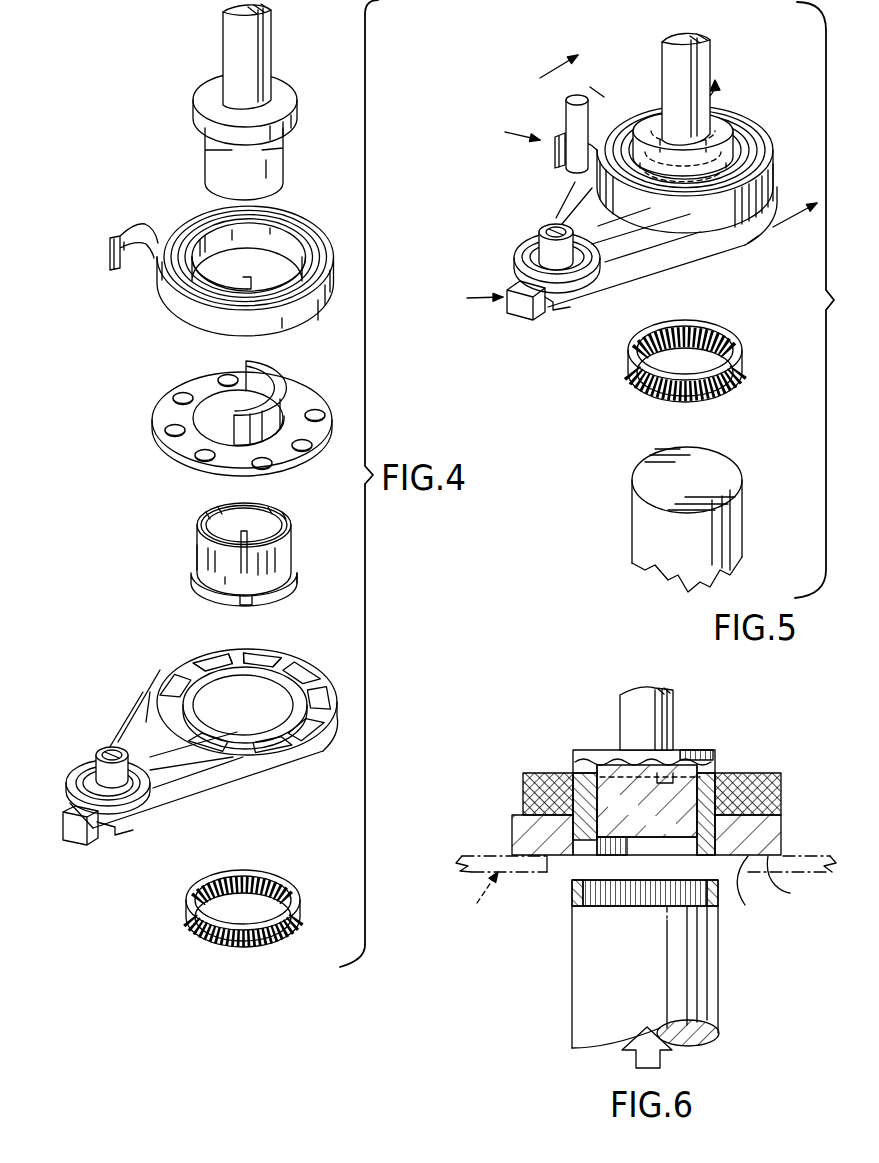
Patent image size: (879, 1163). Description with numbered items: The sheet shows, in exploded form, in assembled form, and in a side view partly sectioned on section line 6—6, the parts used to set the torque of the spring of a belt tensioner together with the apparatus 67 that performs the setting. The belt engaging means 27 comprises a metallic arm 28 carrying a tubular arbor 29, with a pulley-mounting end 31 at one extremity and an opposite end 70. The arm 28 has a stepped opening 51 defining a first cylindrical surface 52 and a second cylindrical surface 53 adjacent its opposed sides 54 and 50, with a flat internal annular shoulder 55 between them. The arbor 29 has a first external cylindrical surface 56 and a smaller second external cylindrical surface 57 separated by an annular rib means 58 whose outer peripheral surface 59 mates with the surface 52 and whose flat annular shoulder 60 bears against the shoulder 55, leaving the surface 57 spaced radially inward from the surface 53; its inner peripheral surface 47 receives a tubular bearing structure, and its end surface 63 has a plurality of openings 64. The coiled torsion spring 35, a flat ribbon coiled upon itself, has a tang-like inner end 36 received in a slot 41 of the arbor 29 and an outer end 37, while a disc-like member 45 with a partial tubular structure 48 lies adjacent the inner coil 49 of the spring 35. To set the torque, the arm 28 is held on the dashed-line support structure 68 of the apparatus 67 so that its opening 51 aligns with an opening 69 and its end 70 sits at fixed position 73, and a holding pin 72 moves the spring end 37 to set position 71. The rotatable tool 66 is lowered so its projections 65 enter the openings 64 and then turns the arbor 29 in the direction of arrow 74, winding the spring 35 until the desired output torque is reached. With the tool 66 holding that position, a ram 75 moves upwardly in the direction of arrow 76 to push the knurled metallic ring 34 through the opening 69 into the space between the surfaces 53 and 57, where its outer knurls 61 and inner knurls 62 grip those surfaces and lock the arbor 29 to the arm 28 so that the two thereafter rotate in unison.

In FIG. 5, the line 6— 6 is at (677, 140).
In FIG. 4, the belt engaging means 27 is at (142, 707).
In FIG. 5, the belt engaging means 27 is at (568, 200).
In FIG. 4, the arm 28 is at (298, 760).
In FIG. 5, the arm 28 is at (713, 243).
In FIG. 4, the tubular arbor 29 is at (212, 568).
In FIG. 6, the tubular arbor 29 is at (583, 778).
In FIG. 4, the end of the belt engaging arm 31 is at (70, 767).
In FIG. 5, the end of the belt engaging arm 31 is at (525, 260).
In FIG. 4, the knurled metallic ring 34 is at (187, 927).
In FIG. 5, the knurled metallic ring 34 is at (633, 382).
In FIG. 6, the knurled metallic ring 34 is at (570, 892).
In FIG. 4, the coiled torsion spring 35 is at (165, 312).
In FIG. 5, the coiled torsion spring 35 is at (773, 177).
In FIG. 4, the inner end of the spring 36 is at (243, 280).
In FIG. 4, the outer end of the spring 37 is at (118, 236).
In FIG. 5, the outer end of the spring 37 is at (553, 153).
In FIG. 4, the slot 41 is at (280, 550).
In FIG. 4, the disc-like member 45 is at (162, 411).
In FIG. 6, the disc-like member 45 is at (525, 813).
In FIG. 4, the inner peripheral surface 47 is at (277, 533).
In FIG. 4, the partial tubular structure 48 is at (273, 377).
In FIG. 6, the partial tubular structure 48 is at (730, 777).
In FIG. 4, the inner coil 49 is at (217, 268).
In FIG. 4, the side of the arm 50 is at (270, 780).
In FIG. 5, the side of the arm 50 is at (705, 258).
In FIG. 6, the side of the arm 50 is at (770, 894).
In FIG. 4, the stepped opening 51 is at (293, 662).
In FIG. 4, the first cylindrical surface 52 is at (267, 657).
In FIG. 4, the second cylindrical surface 53 is at (207, 658).
In FIG. 6, the second cylindrical surface 53 is at (597, 830).
In FIG. 4, the side of the arm 54 is at (148, 690).
In FIG. 4, the flat internal annular shoulder 55 is at (243, 657).
In FIG. 4, the first external cylindrical surface 56 is at (187, 563).
In FIG. 4, the second external cylindrical surface 57 is at (287, 600).
In FIG. 6, the second external cylindrical surface 57 is at (585, 858).
In FIG. 4, the annular rib means 58 is at (295, 570).
In FIG. 4, the outer peripheral surface 59 is at (237, 590).
In FIG. 4, the flat annular shoulder 60 is at (241, 610).
In FIG. 6, the flat annular shoulder 60 is at (710, 833).
In FIG. 4, the knurls 61 is at (250, 943).
In FIG. 5, the knurls 61 is at (730, 387).
In FIG. 4, the knurls 62 is at (265, 877).
In FIG. 5, the knurls 62 is at (710, 328).
In FIG. 4, the end surface 63 is at (198, 530).
In FIG. 4, the openings 64 is at (213, 503).
In FIG. 6, the openings 64 is at (680, 748).
In FIG. 4, the projections 65 is at (213, 153).
In FIG. 5, the projections 65 is at (683, 147).
In FIG. 6, the projections 65 is at (598, 753).
In FIG. 4, the rotatable tool 66 is at (230, 45).
In FIG. 5, the rotatable tool 66 is at (703, 67).
In FIG. 6, the rotatable tool 66 is at (675, 712).
In FIG. 4, the apparatus 67 is at (280, 65).
In FIG. 5, the apparatus 67 is at (653, 60).
In FIG. 6, the support structure 68 is at (470, 901).
In FIG. 6, the opening 69 is at (738, 905).
In FIG. 4, the end of the arm 70 is at (77, 827).
In FIG. 5, the end of the arm 70 is at (513, 307).
In FIG. 5, the set position 71 is at (509, 130).
In FIG. 5, the holding pin 72 is at (567, 110).
In FIG. 5, the fixed position 73 is at (473, 302).
In FIG. 5, the arrow 74 is at (720, 104).
In FIG. 5, the ram 75 is at (645, 523).
In FIG. 6, the ram 75 is at (588, 975).
In FIG. 6, the arrow 76 is at (637, 1060).